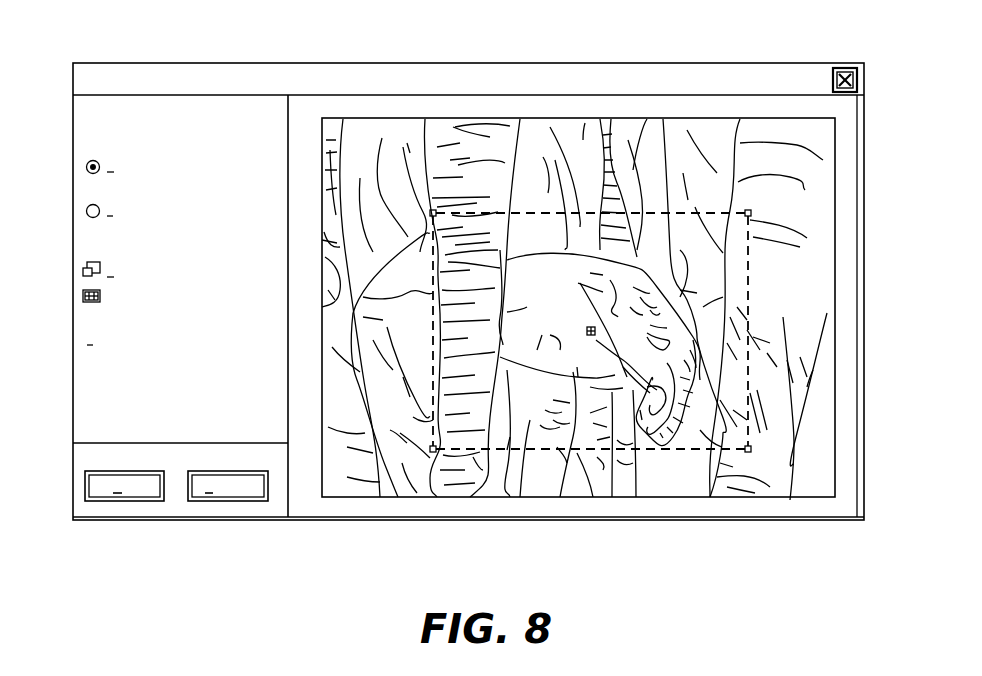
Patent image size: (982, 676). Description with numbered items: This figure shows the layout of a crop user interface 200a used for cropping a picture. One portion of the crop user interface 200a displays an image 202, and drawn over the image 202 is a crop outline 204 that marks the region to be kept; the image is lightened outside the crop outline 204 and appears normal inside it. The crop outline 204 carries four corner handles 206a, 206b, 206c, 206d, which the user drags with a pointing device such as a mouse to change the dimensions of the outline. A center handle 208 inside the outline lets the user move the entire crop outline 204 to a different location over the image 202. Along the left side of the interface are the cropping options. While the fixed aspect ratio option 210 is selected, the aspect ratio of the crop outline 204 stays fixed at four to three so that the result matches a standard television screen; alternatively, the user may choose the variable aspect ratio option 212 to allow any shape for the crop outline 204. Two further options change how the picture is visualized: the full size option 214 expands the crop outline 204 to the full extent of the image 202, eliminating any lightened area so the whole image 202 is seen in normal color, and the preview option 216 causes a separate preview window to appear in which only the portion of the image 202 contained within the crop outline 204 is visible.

The crop user interface 200a is at (445, 347).
The image 202 is at (494, 497).
The crop outline 204 is at (593, 497).
The handle 206a is at (752, 450).
The handle 206b is at (748, 209).
The handle 206c is at (433, 209).
The handle 206d is at (430, 451).
The center handle 208 is at (596, 338).
The fixed aspect ratio option 210 is at (112, 160).
The variable aspect ratio option 212 is at (113, 210).
The full size option 214 is at (120, 270).
The preview option 216 is at (122, 298).